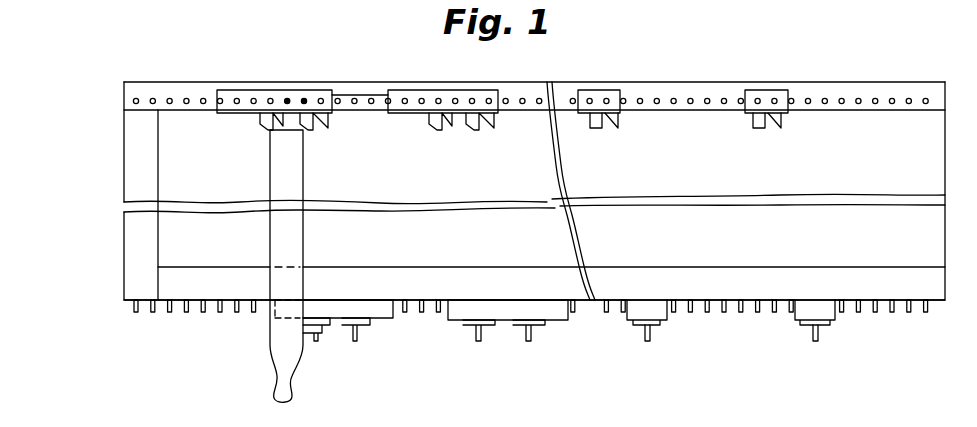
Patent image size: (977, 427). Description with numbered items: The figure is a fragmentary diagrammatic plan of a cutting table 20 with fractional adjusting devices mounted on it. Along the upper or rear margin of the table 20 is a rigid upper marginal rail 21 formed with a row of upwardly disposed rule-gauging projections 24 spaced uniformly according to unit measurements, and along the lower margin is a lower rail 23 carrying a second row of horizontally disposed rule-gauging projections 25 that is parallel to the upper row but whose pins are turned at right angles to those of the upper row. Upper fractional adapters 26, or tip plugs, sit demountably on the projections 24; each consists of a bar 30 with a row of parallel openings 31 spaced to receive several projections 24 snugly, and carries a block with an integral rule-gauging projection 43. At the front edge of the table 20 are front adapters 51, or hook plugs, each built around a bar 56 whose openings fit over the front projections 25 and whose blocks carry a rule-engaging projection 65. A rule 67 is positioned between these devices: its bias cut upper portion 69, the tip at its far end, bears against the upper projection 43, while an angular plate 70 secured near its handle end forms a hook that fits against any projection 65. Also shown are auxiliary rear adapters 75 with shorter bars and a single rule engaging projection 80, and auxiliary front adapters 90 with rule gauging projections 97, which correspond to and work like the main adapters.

The table 20 is at (130, 225).
The upper marginal rail 21 is at (132, 95).
The lower rail 23 is at (178, 292).
The rule-gauging projections 24 is at (187, 98).
The rule-gauging projections 25 is at (219, 312).
The upper fractional adapters 26 is at (264, 84).
The bar 30 is at (382, 90).
The openings 31 is at (304, 99).
The rule-gauging projection 43 is at (318, 126).
The front adapters 51 is at (391, 329).
The bar 56 is at (393, 312).
The rule-engaging projection 65 is at (355, 338).
The rule 67 is at (304, 193).
The bias cut upper portion 69 is at (278, 126).
The angular plate 70 is at (307, 336).
The auxiliary rear adapters 75 is at (599, 94).
The rule engaging projection 80 is at (605, 126).
The auxiliary front adapters 90 is at (660, 312).
The rule gauging projections 97 is at (647, 342).